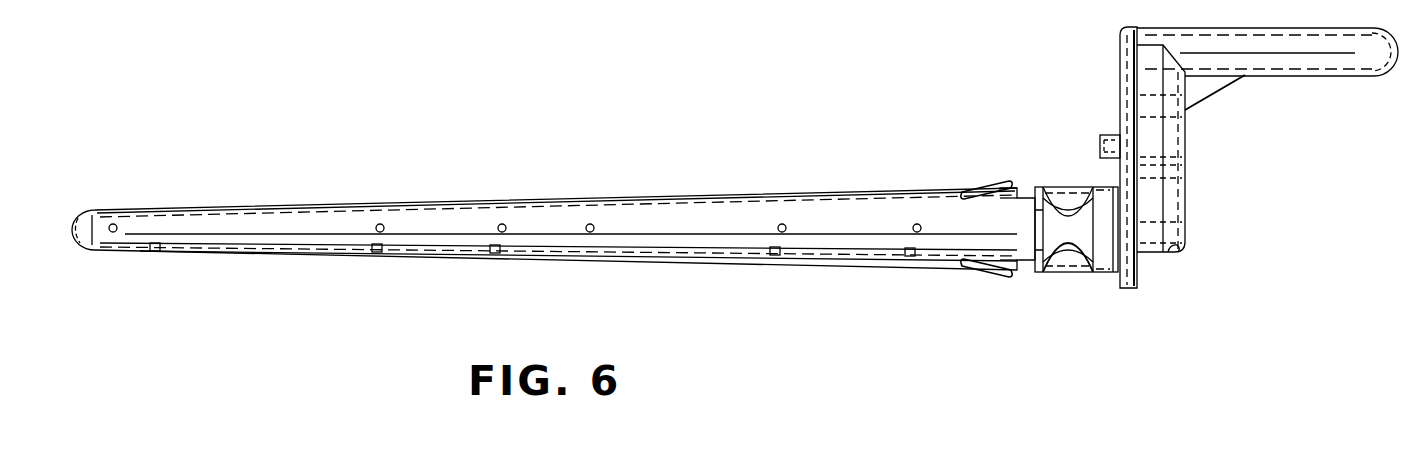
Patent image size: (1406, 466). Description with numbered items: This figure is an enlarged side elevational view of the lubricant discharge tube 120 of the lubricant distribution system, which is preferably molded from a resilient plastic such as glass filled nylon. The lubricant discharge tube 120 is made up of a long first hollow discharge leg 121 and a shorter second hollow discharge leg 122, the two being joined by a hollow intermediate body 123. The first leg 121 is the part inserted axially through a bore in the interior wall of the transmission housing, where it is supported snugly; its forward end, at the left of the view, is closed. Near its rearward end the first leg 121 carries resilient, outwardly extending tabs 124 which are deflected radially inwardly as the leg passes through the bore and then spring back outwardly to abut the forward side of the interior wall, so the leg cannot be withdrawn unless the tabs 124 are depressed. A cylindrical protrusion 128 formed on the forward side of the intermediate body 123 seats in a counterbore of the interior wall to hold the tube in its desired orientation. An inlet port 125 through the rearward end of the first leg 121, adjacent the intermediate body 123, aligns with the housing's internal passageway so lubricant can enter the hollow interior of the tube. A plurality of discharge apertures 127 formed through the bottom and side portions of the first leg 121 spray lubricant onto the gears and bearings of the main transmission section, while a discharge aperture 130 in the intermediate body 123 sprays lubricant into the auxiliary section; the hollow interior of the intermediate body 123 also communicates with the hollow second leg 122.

The lubricant discharge tube 120 is at (508, 151).
The first hollow discharge leg 121 is at (707, 218).
The second hollow discharge leg 122 is at (1316, 78).
The hollow intermediate body 123 is at (1175, 145).
The resilient outwardly extending tabs 124 is at (993, 181).
The inlet port 125 is at (1058, 212).
The discharge apertures 127 is at (386, 226).
The cylindrical protrusion 128 is at (1105, 140).
The discharge aperture 130 is at (1181, 252).